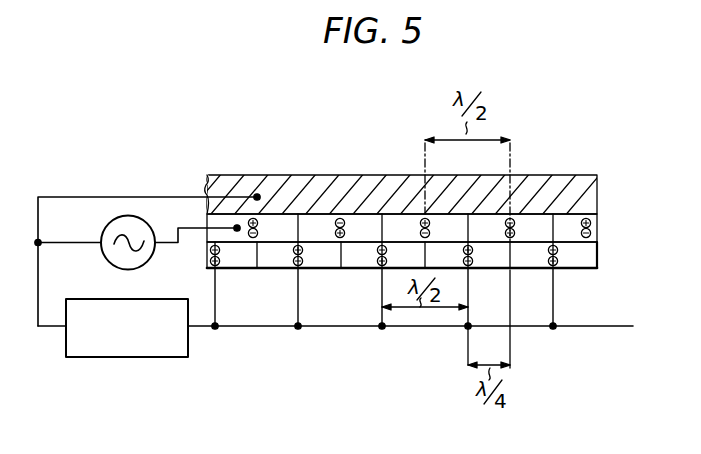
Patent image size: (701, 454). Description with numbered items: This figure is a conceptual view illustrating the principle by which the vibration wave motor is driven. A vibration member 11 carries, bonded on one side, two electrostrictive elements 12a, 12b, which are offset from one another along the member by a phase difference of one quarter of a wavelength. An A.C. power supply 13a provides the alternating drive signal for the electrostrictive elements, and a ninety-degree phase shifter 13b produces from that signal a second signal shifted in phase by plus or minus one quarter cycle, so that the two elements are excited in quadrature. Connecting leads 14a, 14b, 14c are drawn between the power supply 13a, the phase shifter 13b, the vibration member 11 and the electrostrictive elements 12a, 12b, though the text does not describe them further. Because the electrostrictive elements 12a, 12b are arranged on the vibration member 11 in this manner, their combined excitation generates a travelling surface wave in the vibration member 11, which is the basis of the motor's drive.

The vibration member 11 is at (597, 192).
The electrostrictive element 12a is at (597, 223).
The electrostrictive element 12b is at (597, 257).
The A.C. power supply 13a is at (160, 214).
The 90° phase shifter 13b is at (119, 359).
The lead wire to common electrode 14a is at (128, 197).
The lead wire to second element group 14b is at (205, 328).
The lead wire to first element group 14c is at (173, 245).